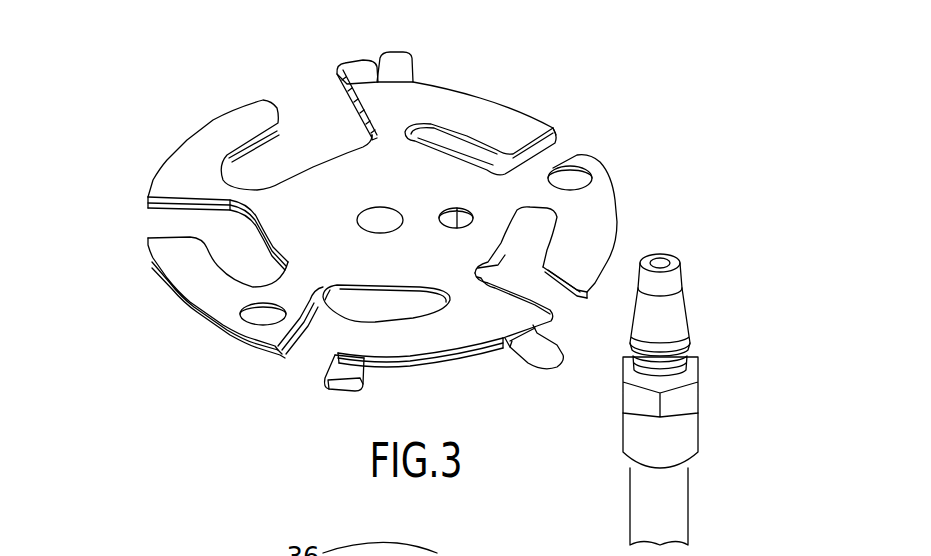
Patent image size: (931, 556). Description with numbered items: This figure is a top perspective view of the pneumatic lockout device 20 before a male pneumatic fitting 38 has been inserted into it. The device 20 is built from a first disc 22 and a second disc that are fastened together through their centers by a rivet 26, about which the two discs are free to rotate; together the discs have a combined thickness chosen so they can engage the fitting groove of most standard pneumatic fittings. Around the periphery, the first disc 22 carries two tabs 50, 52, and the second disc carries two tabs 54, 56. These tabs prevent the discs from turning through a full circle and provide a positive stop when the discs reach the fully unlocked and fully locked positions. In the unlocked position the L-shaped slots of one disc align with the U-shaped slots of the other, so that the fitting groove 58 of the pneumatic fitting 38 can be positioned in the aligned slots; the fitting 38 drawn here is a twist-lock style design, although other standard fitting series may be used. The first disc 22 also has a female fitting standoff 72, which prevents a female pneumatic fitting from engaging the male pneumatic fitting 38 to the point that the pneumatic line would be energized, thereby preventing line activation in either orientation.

The pneumatic lockout device 20 is at (217, 110).
The first disc 22 is at (477, 118).
The rivet 26 is at (380, 207).
The male pneumatic fitting 38 is at (680, 307).
The tab 50 is at (393, 58).
The tab 52 is at (567, 360).
The tab 54 is at (343, 68).
The tab 56 is at (323, 372).
The fitting groove 58 is at (680, 368).
The female fitting standoff 72 is at (468, 155).